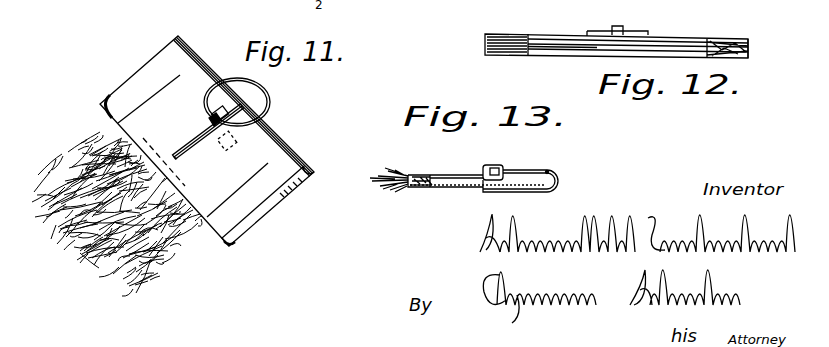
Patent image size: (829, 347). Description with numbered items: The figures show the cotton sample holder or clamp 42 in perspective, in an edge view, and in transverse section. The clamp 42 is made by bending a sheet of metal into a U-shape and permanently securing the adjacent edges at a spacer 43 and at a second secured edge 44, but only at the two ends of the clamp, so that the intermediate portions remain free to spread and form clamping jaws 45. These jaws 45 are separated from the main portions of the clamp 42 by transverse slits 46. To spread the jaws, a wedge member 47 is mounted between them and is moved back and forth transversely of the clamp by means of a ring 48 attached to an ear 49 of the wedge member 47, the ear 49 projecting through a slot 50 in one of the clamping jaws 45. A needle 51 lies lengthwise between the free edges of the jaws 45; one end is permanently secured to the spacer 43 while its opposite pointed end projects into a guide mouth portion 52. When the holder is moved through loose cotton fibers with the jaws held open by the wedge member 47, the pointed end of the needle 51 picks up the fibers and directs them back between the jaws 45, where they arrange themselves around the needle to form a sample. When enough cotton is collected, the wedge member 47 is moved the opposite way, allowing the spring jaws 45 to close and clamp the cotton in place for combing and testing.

In FIG. 11, the sample holder or clamp 42 is at (196, 48).
In FIG. 12, the spacer 43 is at (486, 45).
In FIG. 13, the spacer 43 is at (410, 173).
In FIG. 11, the secured edge 44 is at (243, 240).
In FIG. 11, the clamping jaws 45 is at (204, 203).
In FIG. 12, the clamping jaws 45 is at (566, 24).
In FIG. 11, the transverse slits 46 is at (152, 98).
In FIG. 12, the transverse slits 46 is at (530, 34).
In FIG. 11, the wedge member 47 is at (245, 134).
In FIG. 13, the wedge member 47 is at (497, 188).
In FIG. 11, the ring 48 is at (270, 98).
In FIG. 12, the ring 48 is at (650, 34).
In FIG. 13, the ring 48 is at (548, 172).
In FIG. 11, the ear 49 is at (211, 114).
In FIG. 12, the ear 49 is at (623, 31).
In FIG. 13, the ear 49 is at (498, 166).
In FIG. 11, the slot 50 is at (178, 160).
In FIG. 13, the slot 50 is at (433, 173).
In FIG. 12, the needle 51 is at (597, 47).
In FIG. 13, the needle 51 is at (413, 187).
In FIG. 11, the guide mouth portion 52 is at (230, 247).
In FIG. 12, the guide mouth portion 52 is at (720, 57).